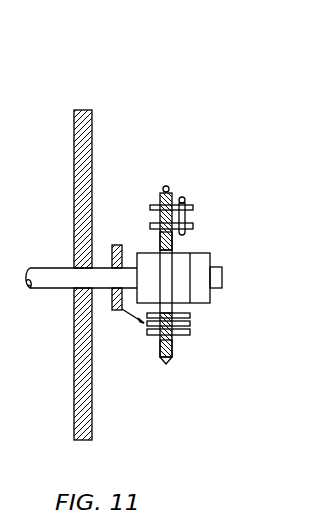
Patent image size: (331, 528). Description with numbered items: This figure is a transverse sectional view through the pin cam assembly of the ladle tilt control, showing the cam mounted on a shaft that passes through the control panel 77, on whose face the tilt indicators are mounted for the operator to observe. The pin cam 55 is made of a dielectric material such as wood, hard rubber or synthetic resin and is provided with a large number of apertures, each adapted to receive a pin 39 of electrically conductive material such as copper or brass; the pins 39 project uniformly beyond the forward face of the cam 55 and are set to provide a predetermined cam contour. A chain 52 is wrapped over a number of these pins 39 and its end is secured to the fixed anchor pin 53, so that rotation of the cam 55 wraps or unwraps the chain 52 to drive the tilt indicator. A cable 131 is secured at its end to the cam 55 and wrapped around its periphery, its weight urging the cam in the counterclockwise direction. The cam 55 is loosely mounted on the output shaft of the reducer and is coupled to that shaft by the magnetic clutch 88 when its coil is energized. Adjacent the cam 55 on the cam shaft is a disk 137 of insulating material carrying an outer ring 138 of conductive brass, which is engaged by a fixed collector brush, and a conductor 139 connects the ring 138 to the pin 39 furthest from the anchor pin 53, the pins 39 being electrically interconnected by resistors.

The control panel 77 is at (92, 418).
The disk 137 is at (121, 246).
The ring 138 is at (120, 312).
The cable 131 is at (167, 190).
The pin cam 55 is at (174, 238).
The chain 52 is at (183, 197).
The pin 39 is at (193, 207).
The anchor pin 53 is at (193, 226).
The conductor 139 is at (138, 318).
The magnetic clutch 88 is at (203, 297).